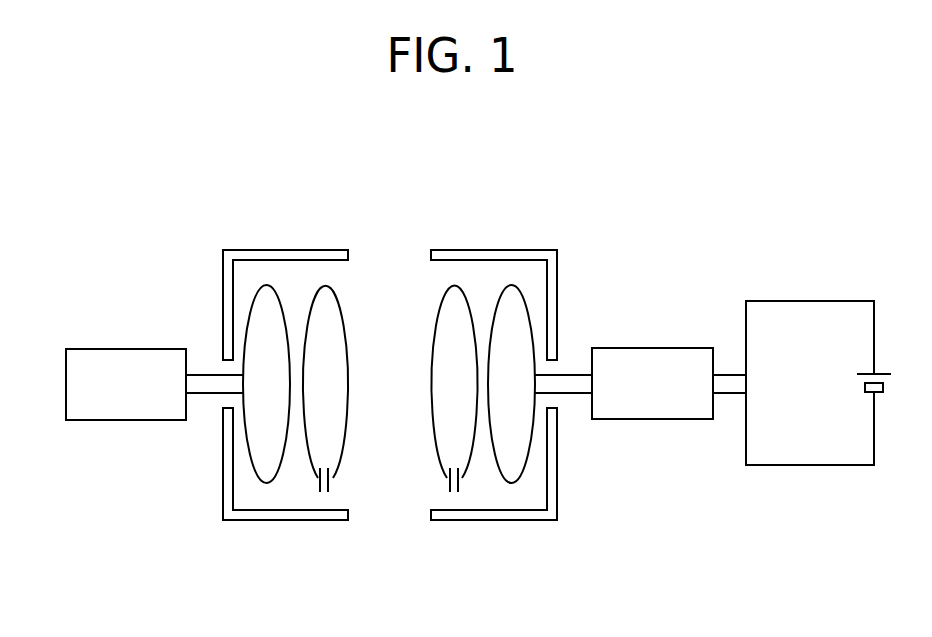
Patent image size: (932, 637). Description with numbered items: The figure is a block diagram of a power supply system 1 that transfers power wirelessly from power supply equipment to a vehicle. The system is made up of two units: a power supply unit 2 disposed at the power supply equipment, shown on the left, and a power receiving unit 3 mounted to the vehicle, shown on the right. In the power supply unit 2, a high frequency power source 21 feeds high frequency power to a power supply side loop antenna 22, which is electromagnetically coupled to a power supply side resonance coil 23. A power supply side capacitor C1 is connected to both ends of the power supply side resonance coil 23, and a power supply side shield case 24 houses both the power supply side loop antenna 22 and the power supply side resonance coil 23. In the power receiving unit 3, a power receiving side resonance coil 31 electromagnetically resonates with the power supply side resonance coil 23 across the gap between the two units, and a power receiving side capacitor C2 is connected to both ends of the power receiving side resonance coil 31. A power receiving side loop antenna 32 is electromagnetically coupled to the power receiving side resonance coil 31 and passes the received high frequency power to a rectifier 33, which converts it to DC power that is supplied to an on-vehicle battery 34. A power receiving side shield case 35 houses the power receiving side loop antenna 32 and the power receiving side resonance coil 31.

The power supply system 1 is at (895, 536).
The power supply unit 2 is at (255, 554).
The power receiving unit 3 is at (603, 554).
The high frequency power source 21 is at (125, 348).
The power supply side loop antenna 22 is at (255, 297).
The power supply side resonance coil 23 is at (313, 297).
The power supply side shield case 24 is at (222, 270).
The power receiving side resonance coil 31 is at (467, 297).
The power receiving side loop antenna 32 is at (523, 297).
The rectifier 33 is at (655, 348).
The on-vehicle battery 34 is at (883, 372).
The power receiving side shield case 35 is at (557, 270).
The power supply side capacitor C1 is at (321, 490).
The power receiving side capacitor C2 is at (460, 490).